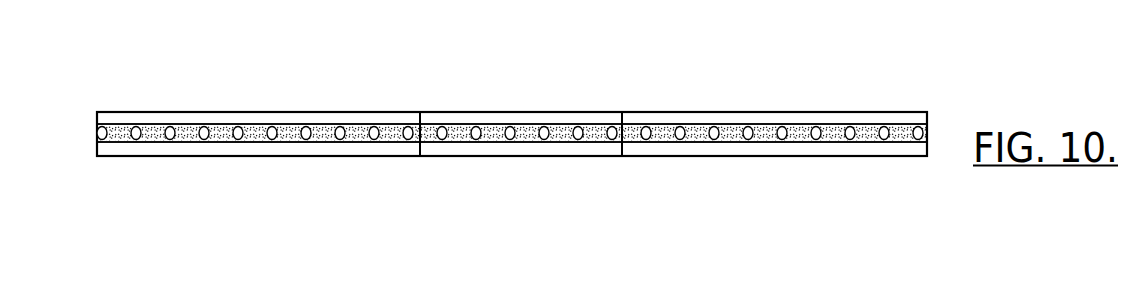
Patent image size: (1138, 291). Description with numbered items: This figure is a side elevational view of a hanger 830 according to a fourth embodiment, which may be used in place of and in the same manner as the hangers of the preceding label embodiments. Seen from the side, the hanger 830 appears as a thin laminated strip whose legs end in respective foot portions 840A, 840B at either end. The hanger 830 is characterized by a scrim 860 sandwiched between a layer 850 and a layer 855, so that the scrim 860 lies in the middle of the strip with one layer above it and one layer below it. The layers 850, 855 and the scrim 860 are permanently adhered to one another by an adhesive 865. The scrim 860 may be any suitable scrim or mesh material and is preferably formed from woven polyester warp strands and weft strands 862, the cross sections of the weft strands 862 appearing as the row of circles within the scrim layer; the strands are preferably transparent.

The hanger 830 is at (532, 84).
The foot portion 840A is at (268, 72).
The foot portion 840B is at (790, 104).
The layer 855 is at (113, 111).
The adhesive 865 is at (110, 142).
The layer 850 is at (157, 146).
The scrim 860 is at (381, 138).
The weft strands 862 is at (303, 136).